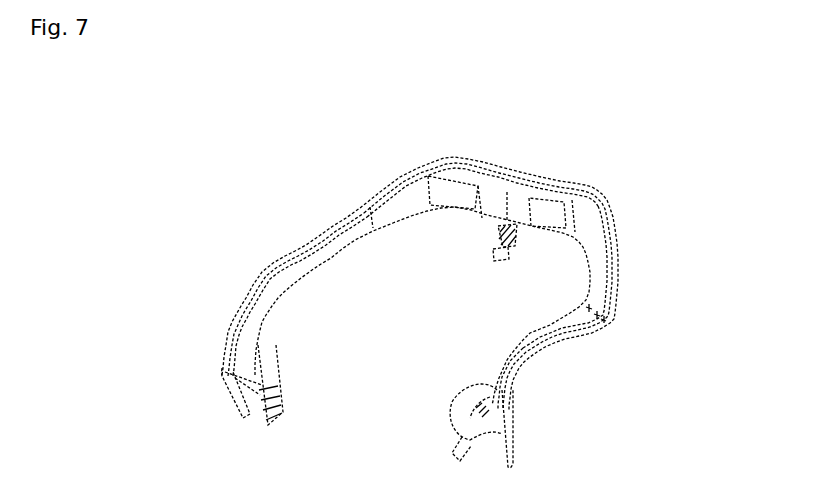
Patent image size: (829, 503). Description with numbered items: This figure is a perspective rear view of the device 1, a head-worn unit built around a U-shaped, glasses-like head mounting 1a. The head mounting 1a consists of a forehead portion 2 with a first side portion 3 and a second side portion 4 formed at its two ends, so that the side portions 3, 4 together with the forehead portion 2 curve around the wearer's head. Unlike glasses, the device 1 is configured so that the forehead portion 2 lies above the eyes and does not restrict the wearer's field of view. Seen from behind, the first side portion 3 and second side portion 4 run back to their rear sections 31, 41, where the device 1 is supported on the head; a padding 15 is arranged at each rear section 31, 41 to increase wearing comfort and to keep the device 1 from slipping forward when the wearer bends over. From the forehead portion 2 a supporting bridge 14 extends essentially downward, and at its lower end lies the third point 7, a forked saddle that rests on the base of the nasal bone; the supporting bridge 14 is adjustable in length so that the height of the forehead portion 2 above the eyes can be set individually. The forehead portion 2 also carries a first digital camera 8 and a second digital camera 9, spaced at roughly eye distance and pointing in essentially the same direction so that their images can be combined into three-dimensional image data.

The device 1 is at (243, 151).
The head mounting 1a is at (497, 176).
The forehead portion 2 is at (418, 203).
The first side portion 3 is at (619, 292).
The second side portion 4 is at (322, 242).
The third point 7 is at (503, 258).
The first digital camera 8 is at (556, 217).
The second digital camera 9 is at (453, 204).
The supporting bridge 14 is at (512, 238).
The padding 15 is at (458, 415).
The rear section of the first side portion 31 is at (507, 380).
The rear section of the second side portion 41 is at (241, 344).